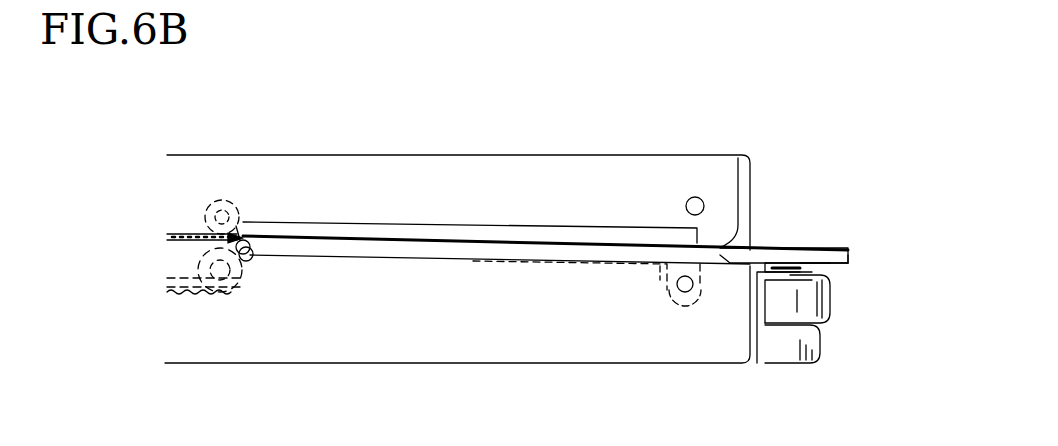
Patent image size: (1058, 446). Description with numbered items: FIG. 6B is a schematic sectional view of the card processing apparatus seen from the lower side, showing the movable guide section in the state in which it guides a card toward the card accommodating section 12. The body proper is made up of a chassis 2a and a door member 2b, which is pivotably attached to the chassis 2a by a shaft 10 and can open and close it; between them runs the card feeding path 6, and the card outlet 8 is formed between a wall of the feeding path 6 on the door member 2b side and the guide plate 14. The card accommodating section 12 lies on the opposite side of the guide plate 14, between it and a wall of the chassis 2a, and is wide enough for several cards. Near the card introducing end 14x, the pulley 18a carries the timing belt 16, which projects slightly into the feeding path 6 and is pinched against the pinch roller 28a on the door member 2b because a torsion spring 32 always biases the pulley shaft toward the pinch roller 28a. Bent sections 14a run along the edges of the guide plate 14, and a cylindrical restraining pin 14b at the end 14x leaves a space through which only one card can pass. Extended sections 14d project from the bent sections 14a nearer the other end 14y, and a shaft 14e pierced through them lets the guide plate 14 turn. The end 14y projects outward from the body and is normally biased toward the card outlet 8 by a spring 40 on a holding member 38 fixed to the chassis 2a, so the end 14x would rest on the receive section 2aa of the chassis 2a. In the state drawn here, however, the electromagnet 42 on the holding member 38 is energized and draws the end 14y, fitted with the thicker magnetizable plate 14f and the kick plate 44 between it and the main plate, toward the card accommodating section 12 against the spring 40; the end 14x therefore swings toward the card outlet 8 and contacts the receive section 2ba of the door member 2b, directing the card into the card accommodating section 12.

The chassis 2a is at (382, 345).
The door member 2b is at (333, 157).
The receive section 2aa is at (297, 15).
The receive section 2ba is at (237, 233).
The card feeding path 6 is at (182, 232).
The card outlet 8 is at (446, 230).
The shaft 10 is at (695, 197).
The card accommodating section 12 is at (470, 252).
The guide plate 14 is at (507, 242).
The bent sections 14a is at (605, 264).
The restraining pin 14b is at (252, 262).
The extended sections 14d is at (665, 270).
The shaft 14e is at (686, 292).
The magnetizable plate 14f is at (835, 266).
The card introducing end 14x is at (248, 230).
The end of the guide plate 14y is at (848, 250).
The timing belt 16 is at (178, 300).
The pulley 18a is at (228, 292).
The pinch roller 28a is at (214, 203).
The torsion spring 32 is at (180, 278).
The holding member 38 is at (756, 365).
The spring 40 is at (775, 265).
The electromagnet 42 is at (815, 300).
The kick plate 44 is at (850, 258).